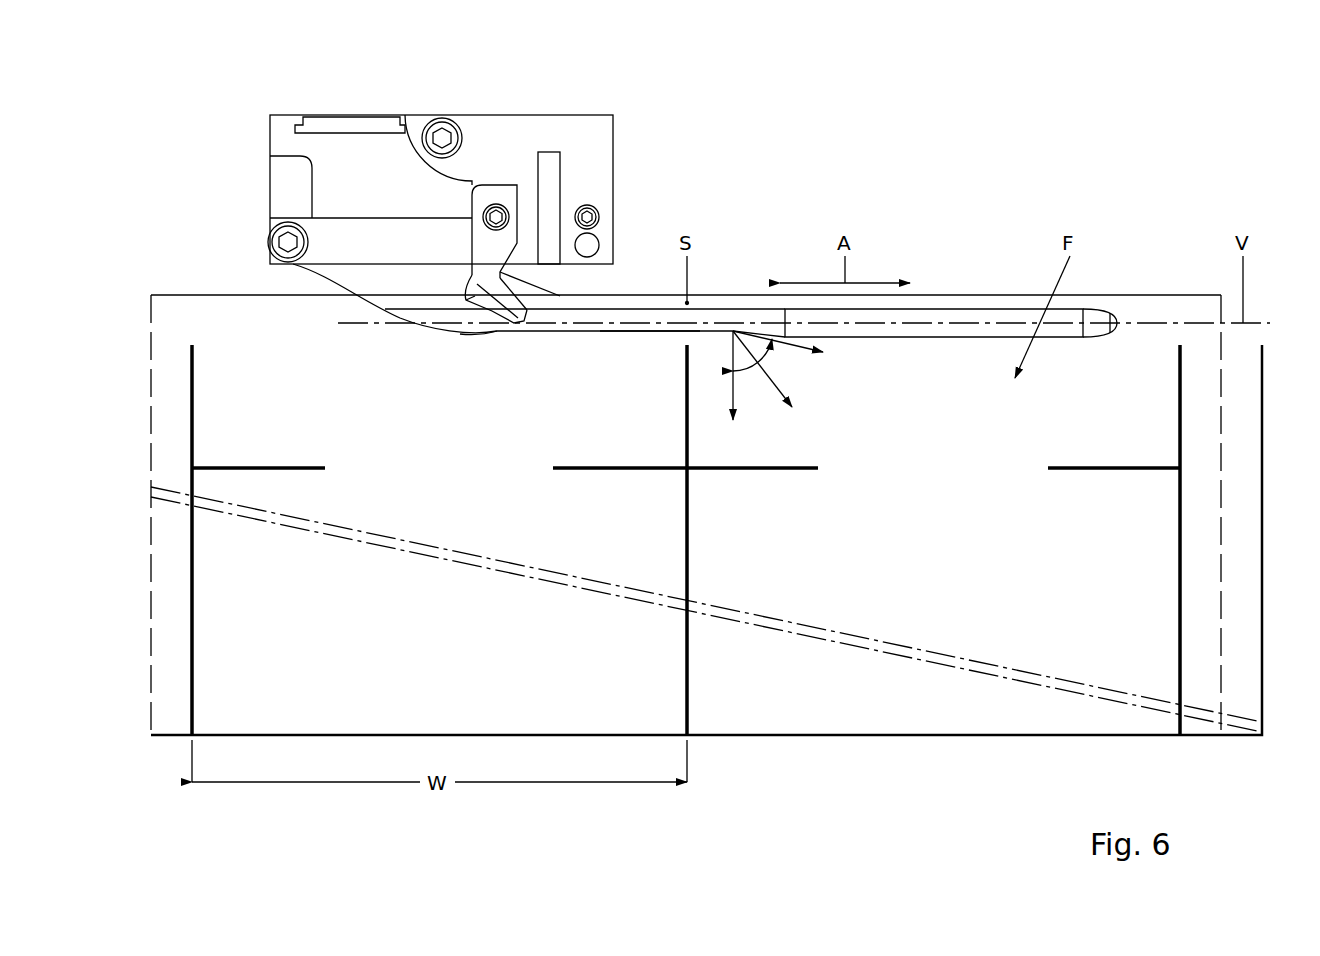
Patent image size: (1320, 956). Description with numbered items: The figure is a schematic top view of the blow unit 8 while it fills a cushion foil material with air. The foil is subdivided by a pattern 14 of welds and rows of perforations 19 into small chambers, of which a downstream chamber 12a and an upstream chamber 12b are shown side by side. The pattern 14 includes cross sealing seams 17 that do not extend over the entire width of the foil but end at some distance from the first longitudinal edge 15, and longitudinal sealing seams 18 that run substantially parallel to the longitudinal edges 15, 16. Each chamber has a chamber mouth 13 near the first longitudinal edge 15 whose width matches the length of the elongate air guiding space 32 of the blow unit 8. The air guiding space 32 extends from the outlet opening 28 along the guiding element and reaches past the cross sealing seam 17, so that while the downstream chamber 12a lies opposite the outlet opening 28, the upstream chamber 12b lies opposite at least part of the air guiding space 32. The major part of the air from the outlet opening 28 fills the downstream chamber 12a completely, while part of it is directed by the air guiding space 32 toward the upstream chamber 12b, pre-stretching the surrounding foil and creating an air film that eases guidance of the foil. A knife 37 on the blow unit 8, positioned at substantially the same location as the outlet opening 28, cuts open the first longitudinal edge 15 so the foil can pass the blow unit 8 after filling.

The blow unit 8 is at (414, 104).
The knife 37 is at (496, 197).
The chamber mouth 13 is at (275, 385).
The pattern 14 is at (706, 380).
The outlet opening 28 is at (499, 334).
The air guiding space 32 is at (650, 333).
The first longitudinal edge 15 is at (930, 295).
The second longitudinal edge 16 is at (930, 740).
The rows of perforations 19 is at (149, 369).
The cross sealing seams 17 is at (193, 390).
The longitudinal sealing seams 18 is at (263, 468).
The downstream chamber 12a is at (432, 428).
The upstream chamber 12b is at (927, 428).